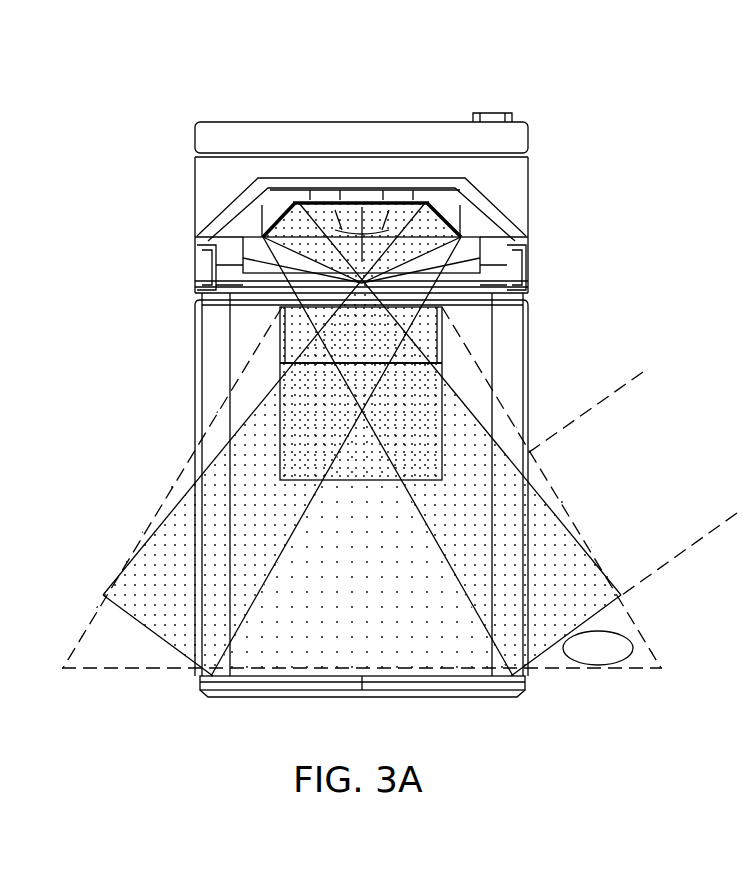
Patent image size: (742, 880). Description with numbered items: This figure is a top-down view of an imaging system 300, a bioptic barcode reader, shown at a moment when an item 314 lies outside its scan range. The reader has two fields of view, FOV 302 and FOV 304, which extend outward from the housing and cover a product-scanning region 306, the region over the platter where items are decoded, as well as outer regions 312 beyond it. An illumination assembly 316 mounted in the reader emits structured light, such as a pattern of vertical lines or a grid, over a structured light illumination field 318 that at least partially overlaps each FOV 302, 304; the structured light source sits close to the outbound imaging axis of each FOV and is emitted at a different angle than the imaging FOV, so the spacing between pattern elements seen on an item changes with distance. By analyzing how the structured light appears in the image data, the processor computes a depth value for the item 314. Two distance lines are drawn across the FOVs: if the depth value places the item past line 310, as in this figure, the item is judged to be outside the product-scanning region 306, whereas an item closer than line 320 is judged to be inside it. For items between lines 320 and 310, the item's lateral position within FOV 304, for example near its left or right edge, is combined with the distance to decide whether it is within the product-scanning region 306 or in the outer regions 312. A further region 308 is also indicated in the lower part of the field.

The imaging system 300 is at (132, 70).
The field of view 302 is at (192, 477).
The field of view 304 is at (546, 488).
The product-scanning region 306 is at (386, 568).
The lower field region 308 is at (301, 648).
The line 310 is at (707, 533).
The outer regions 312 is at (572, 569).
The item 314 is at (598, 667).
The illumination assembly 316 is at (354, 192).
The structured light illumination field 318 is at (155, 519).
The line 320 is at (598, 405).